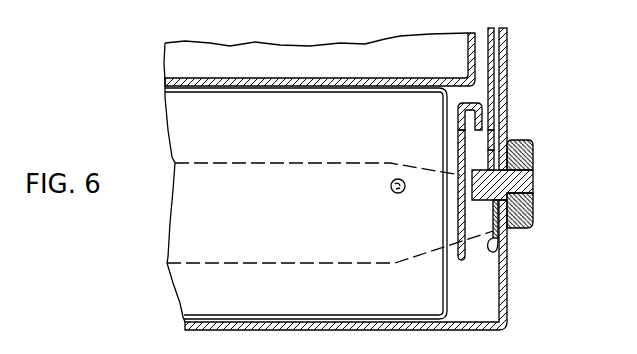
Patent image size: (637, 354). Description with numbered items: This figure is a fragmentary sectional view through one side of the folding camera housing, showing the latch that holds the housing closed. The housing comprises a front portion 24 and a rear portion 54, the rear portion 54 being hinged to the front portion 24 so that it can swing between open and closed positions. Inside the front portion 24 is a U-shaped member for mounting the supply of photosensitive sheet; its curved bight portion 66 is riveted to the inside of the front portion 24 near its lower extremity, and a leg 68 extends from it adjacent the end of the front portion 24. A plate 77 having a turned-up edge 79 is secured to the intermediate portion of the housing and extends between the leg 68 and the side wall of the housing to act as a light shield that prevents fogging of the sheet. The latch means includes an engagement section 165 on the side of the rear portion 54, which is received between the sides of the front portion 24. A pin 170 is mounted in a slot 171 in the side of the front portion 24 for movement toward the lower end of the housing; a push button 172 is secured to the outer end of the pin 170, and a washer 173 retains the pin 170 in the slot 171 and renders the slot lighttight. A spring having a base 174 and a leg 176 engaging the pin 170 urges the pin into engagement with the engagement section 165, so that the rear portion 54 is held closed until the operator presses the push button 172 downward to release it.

The front portion 24 is at (507, 115).
The rear portion 54 is at (495, 97).
The bight portion 66 is at (398, 290).
The leg 68 is at (449, 294).
The plate 77 is at (456, 219).
The turned-up edge 79 is at (468, 102).
The engagement section 165 is at (488, 160).
The pin 170 is at (533, 183).
The slot 171 is at (507, 210).
The push button 172 is at (533, 150).
The washer 173 is at (494, 143).
The base 174 is at (335, 262).
The leg 176 is at (490, 254).